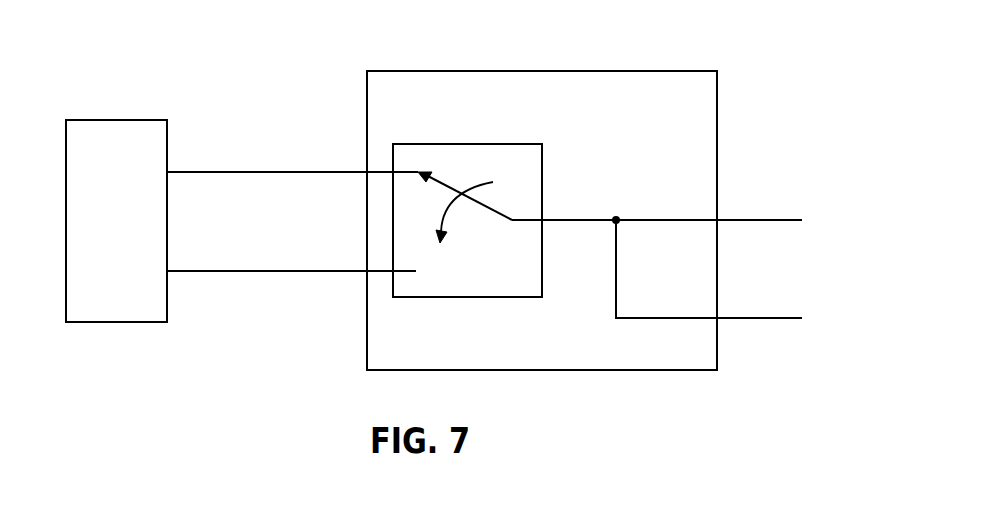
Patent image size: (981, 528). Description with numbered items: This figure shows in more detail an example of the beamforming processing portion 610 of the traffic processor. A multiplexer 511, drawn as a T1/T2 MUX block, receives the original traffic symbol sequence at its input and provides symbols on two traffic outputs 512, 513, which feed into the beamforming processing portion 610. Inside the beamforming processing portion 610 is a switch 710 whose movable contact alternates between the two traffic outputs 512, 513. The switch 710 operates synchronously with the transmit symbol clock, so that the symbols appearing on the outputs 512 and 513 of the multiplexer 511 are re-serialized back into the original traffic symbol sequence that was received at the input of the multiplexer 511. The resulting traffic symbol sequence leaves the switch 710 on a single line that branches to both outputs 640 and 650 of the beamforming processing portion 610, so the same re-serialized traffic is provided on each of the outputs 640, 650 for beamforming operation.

The multiplexer 511 is at (117, 120).
The traffic output 512 is at (277, 172).
The traffic output 513 is at (277, 271).
The beamforming processing portion 610 is at (542, 71).
The switch 710 is at (467, 144).
The output 640 is at (772, 220).
The output 650 is at (772, 318).